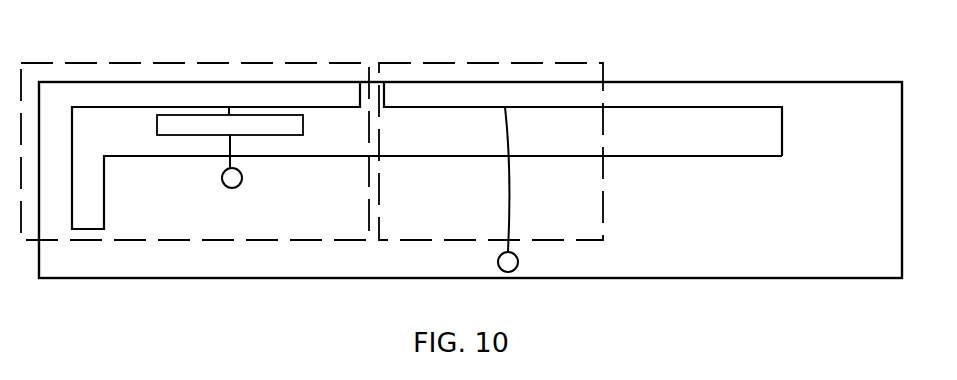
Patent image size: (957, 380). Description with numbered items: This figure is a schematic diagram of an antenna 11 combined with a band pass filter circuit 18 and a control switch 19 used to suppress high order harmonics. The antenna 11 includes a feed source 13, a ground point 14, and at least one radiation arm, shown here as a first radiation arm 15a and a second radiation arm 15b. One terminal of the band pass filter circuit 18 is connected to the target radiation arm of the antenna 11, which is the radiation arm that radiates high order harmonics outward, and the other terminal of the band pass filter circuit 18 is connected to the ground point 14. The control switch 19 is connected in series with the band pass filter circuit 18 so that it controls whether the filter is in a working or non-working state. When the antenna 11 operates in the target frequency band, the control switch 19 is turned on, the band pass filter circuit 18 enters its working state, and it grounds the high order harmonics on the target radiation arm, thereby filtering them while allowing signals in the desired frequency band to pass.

The antenna 11 is at (803, 82).
The feed source 13 is at (518, 262).
The ground point 14 is at (243, 178).
The first radiation arm 15a is at (68, 82).
The second radiation arm 15b is at (530, 82).
The band pass filter circuit 18 is at (263, 115).
The control switch 19 is at (232, 144).